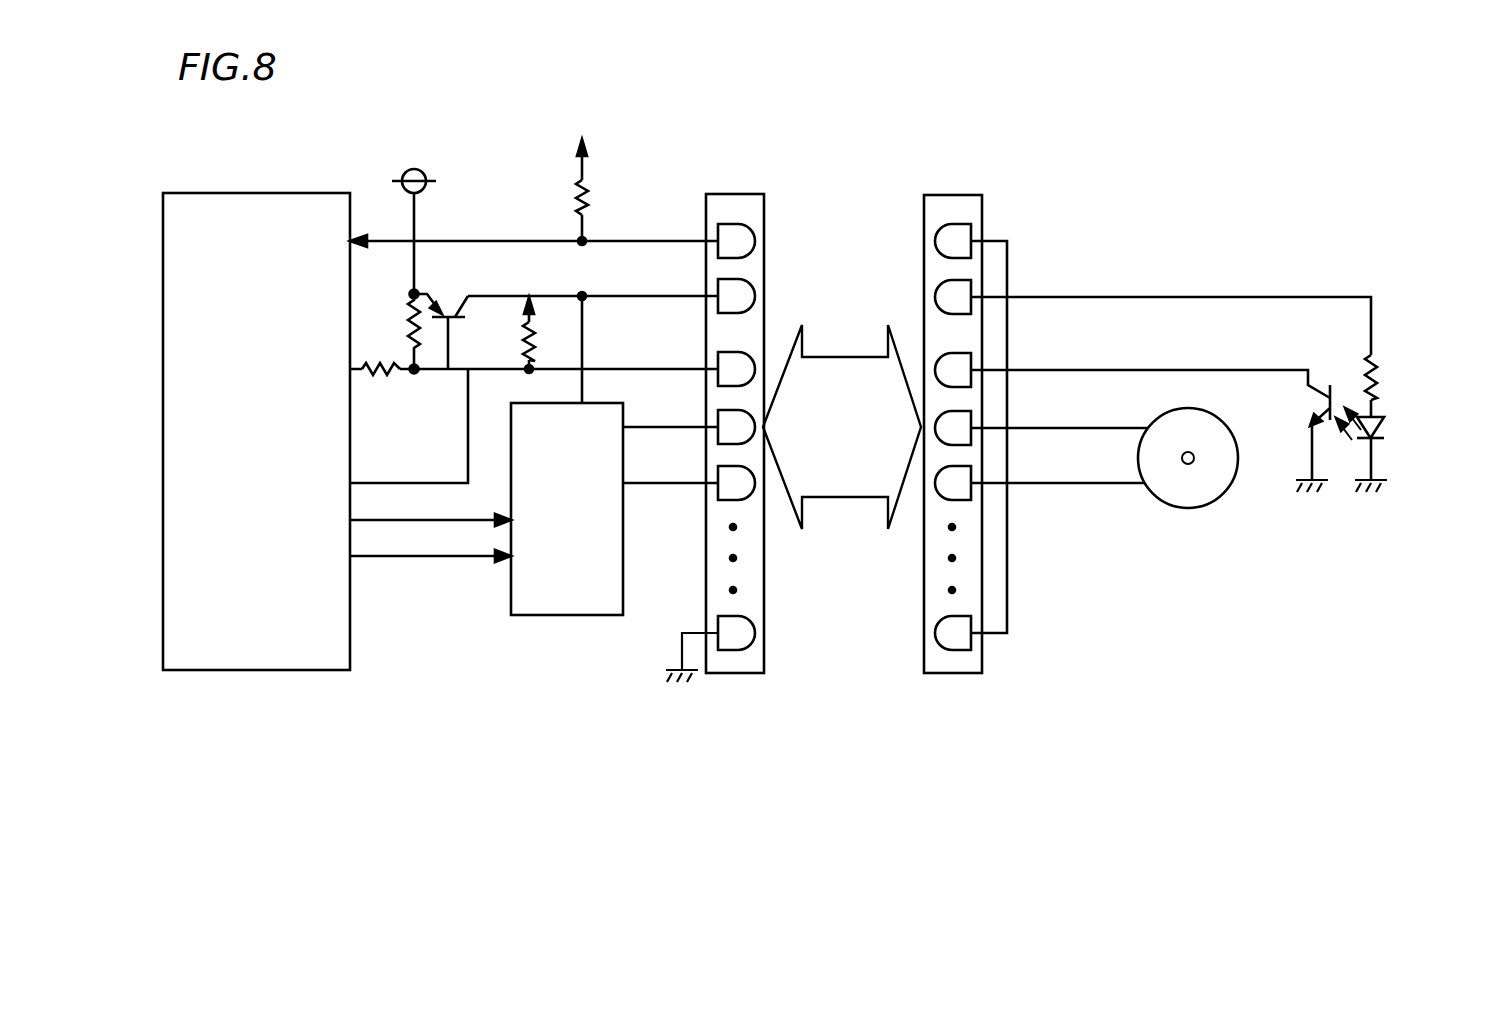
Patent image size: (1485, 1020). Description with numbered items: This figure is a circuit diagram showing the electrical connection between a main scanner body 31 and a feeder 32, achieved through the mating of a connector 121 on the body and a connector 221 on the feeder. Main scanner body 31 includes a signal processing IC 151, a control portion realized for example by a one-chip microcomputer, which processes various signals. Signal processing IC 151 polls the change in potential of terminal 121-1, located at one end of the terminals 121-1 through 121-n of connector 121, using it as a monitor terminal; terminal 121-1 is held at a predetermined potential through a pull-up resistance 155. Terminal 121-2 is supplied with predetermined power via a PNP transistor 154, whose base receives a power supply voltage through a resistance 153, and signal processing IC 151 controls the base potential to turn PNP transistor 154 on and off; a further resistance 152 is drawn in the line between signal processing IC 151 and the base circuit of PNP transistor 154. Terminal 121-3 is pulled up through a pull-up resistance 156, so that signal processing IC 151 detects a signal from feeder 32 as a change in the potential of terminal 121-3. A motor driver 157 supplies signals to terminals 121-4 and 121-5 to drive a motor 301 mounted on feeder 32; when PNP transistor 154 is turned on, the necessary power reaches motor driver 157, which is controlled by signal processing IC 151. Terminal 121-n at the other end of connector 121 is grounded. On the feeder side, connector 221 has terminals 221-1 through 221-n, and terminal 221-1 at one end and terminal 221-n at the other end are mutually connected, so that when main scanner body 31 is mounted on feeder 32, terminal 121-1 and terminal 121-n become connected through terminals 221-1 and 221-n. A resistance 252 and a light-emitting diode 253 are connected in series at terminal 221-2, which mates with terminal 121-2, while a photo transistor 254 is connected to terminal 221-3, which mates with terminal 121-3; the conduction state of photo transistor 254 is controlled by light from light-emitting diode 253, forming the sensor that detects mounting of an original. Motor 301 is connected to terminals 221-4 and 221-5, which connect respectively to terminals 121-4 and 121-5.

The signal processing IC 151 is at (290, 192).
The resistor 152 is at (387, 382).
The resistance 153 is at (404, 331).
The PNP transistor 154 is at (451, 305).
The pull-up resistance 155 is at (588, 192).
The pull-up resistance 156 is at (523, 343).
The motor driver 157 is at (511, 601).
The connector 121 is at (731, 677).
The terminal 121-1 is at (728, 233).
The terminal 121-2 is at (728, 288).
The terminal 121-3 is at (728, 361).
The terminal 121-4 is at (728, 419).
The terminal 121-5 is at (728, 475).
The terminal 121-n is at (728, 625).
The connector 221 is at (952, 677).
The terminal 221-1 is at (963, 234).
The terminal 221-2 is at (963, 289).
The terminal 221-3 is at (963, 362).
The terminal 221-4 is at (963, 420).
The terminal 221-5 is at (963, 476).
The terminal 221-n is at (963, 626).
The resistance 252 is at (1384, 376).
The light-emitting diode 253 is at (1382, 432).
The photo transistor 254 is at (1312, 404).
The motor 301 is at (1187, 509).
The main scanner body 31 is at (485, 665).
The feeder 32 is at (1263, 595).